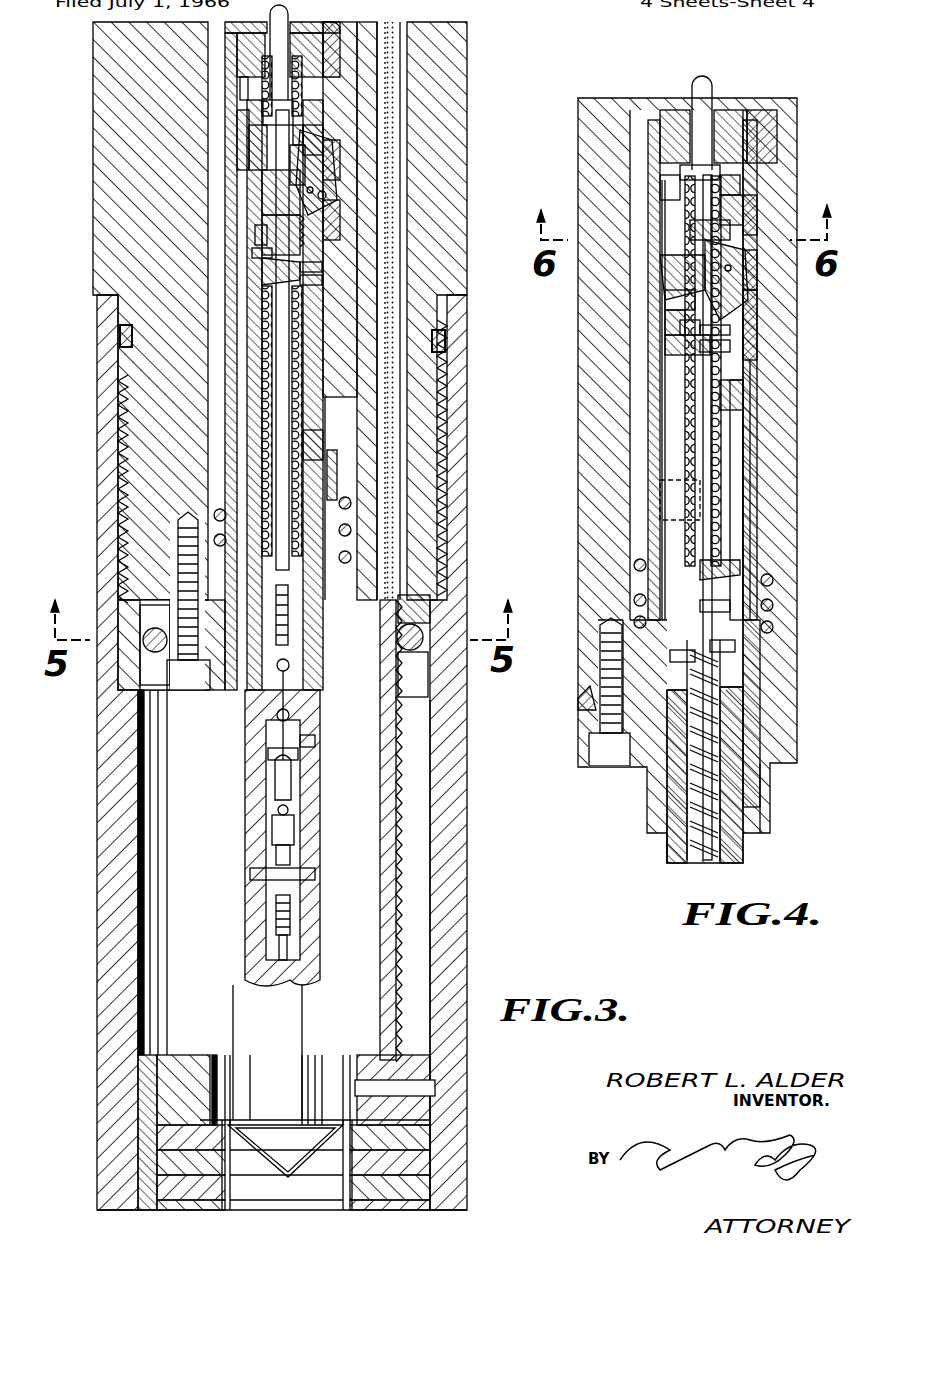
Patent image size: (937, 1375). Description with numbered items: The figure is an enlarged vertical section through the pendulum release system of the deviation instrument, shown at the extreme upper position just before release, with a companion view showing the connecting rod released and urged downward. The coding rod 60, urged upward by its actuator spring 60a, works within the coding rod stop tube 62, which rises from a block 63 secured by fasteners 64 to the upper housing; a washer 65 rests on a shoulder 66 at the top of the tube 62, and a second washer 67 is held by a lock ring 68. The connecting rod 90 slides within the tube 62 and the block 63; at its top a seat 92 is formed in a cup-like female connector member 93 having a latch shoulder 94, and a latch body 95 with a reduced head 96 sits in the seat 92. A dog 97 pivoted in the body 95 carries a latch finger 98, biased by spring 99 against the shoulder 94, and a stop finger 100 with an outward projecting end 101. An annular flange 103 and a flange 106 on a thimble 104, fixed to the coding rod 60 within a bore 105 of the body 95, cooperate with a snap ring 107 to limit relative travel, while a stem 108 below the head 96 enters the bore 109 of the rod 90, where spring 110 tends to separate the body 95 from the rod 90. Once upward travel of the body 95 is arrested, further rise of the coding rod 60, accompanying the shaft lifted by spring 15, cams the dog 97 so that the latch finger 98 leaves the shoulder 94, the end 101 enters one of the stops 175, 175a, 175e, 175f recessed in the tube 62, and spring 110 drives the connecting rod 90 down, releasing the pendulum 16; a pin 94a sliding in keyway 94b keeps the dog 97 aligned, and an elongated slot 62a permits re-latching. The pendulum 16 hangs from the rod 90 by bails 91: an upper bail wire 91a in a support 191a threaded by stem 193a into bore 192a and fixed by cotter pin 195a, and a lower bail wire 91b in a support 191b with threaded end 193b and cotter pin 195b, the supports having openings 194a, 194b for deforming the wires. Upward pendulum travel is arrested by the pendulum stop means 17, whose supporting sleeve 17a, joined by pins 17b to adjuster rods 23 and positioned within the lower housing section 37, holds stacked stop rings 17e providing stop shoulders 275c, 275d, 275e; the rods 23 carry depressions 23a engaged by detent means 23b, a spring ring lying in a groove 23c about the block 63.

In FIG. 3, the spring 15 is at (212, 513).
In FIG. 4, the spring 15 is at (775, 632).
In FIG. 3, the pendulum 16 is at (254, 1029).
In FIG. 3, the pendulum stop means 17 is at (228, 1160).
In FIG. 3, the supporting sleeve 17a is at (150, 1105).
In FIG. 3, the pins 17b is at (410, 1088).
In FIG. 3, the stacked stop rings 17e is at (240, 1195).
In FIG. 3, the adjuster rods 23 is at (400, 928).
In FIG. 3, the axially spaced depressions 23a is at (400, 836).
In FIG. 3, the detent means 23b is at (418, 645).
In FIG. 4, the detent means 23b is at (582, 708).
In FIG. 3, the groove 23c is at (440, 612).
In FIG. 3, the lower housing section 37 is at (112, 972).
In FIG. 3, the coding rod 60 is at (268, 15).
In FIG. 4, the coding rod 60 is at (690, 95).
In FIG. 3, the coding rod actuator spring 60a is at (292, 40).
In FIG. 4, the coding rod actuator spring 60a is at (715, 112).
In FIG. 3, the coding rod stop tube 62 is at (200, 440).
In FIG. 4, the coding rod stop tube 62 is at (640, 132).
In FIG. 3, the elongated slot 62a is at (330, 412).
In FIG. 4, the elongated slot 62a is at (756, 480).
In FIG. 3, the block 63 is at (165, 693).
In FIG. 4, the block 63 is at (780, 724).
In FIG. 3, the fasteners 64 is at (178, 565).
In FIG. 4, the fasteners 64 is at (610, 762).
In FIG. 3, the washer 65 is at (240, 62).
In FIG. 4, the washer 65 is at (656, 150).
In FIG. 3, the shoulder 66 is at (330, 70).
In FIG. 4, the shoulder 66 is at (660, 172).
In FIG. 3, the second washer 67 is at (337, 45).
In FIG. 4, the second washer 67 is at (790, 102).
In FIG. 3, the lock ring 68 is at (228, 32).
In FIG. 3, the connecting rod 90 is at (258, 396).
In FIG. 4, the connecting rod 90 is at (670, 850).
In FIG. 3, the bails 91 is at (266, 776).
In FIG. 3, the upper bail wire 91a is at (268, 752).
In FIG. 3, the lower bail wire 91b is at (276, 848).
In FIG. 3, the seat 92 is at (325, 282).
In FIG. 4, the seat 92 is at (735, 615).
In FIG. 3, the cup-like female connector member 93 is at (260, 300).
In FIG. 4, the cup-like female connector member 93 is at (730, 663).
In FIG. 3, the latch shoulder 94 is at (296, 208).
In FIG. 4, the latch shoulder 94 is at (742, 565).
In FIG. 3, the pin 94a is at (262, 188).
In FIG. 4, the pin 94a is at (665, 262).
In FIG. 3, the elongated keyway 94b is at (262, 165).
In FIG. 4, the elongated keyway 94b is at (665, 385).
In FIG. 3, the latch body 95 is at (255, 102).
In FIG. 4, the latch body 95 is at (666, 312).
In FIG. 3, the reduced head 96 is at (262, 272).
In FIG. 4, the reduced head 96 is at (735, 348).
In FIG. 3, the dog 97 is at (318, 240).
In FIG. 3, the latch finger 98 is at (322, 268).
In FIG. 4, the latch finger 98 is at (735, 330).
In FIG. 3, the spring 99 is at (262, 252).
In FIG. 4, the spring 99 is at (680, 330).
In FIG. 3, the stop finger 100 is at (326, 198).
In FIG. 3, the outward projecting end 101 is at (305, 160).
In FIG. 4, the outward projecting end 101 is at (735, 235).
In FIG. 3, the annular flange 103 is at (258, 238).
In FIG. 4, the annular flange 103 is at (662, 200).
In FIG. 3, the thimble 104 is at (250, 124).
In FIG. 4, the thimble 104 is at (745, 235).
In FIG. 3, the bore 105 is at (300, 100).
In FIG. 4, the bore 105 is at (666, 292).
In FIG. 3, the flange 106 is at (318, 120).
In FIG. 4, the flange 106 is at (670, 496).
In FIG. 3, the snap ring 107 is at (250, 82).
In FIG. 4, the snap ring 107 is at (740, 180).
In FIG. 3, the stem 108 is at (280, 355).
In FIG. 4, the stem 108 is at (662, 430).
In FIG. 4, the bore 109 is at (722, 812).
In FIG. 3, the spring 110 is at (312, 447).
In FIG. 4, the spring 110 is at (742, 402).
In FIG. 3, the stop 175 is at (390, 322).
In FIG. 4, the stop 175 is at (756, 378).
In FIG. 3, the stop 175a is at (367, 300).
In FIG. 4, the stop 175a is at (760, 358).
In FIG. 3, the stop 175e is at (335, 220).
In FIG. 4, the stop 175e is at (750, 270).
In FIG. 3, the stop 175f is at (335, 178).
In FIG. 4, the stop 175f is at (750, 215).
In FIG. 3, the support 191a is at (278, 718).
In FIG. 3, the support 191b is at (295, 840).
In FIG. 3, the bore 192a is at (280, 668).
In FIG. 3, the threaded stem 193a is at (290, 628).
In FIG. 3, the threaded end 193b is at (292, 915).
In FIG. 3, the diametrical opening 194a is at (296, 765).
In FIG. 3, the openings 194b is at (290, 810).
In FIG. 3, the cotter pin 195a is at (312, 737).
In FIG. 3, the cotter pin 195b is at (252, 875).
In FIG. 3, the stop shoulder 275c is at (348, 1210).
In FIG. 3, the stop shoulder 275d is at (350, 1180).
In FIG. 3, the upper stop shoulder 275e is at (350, 1150).